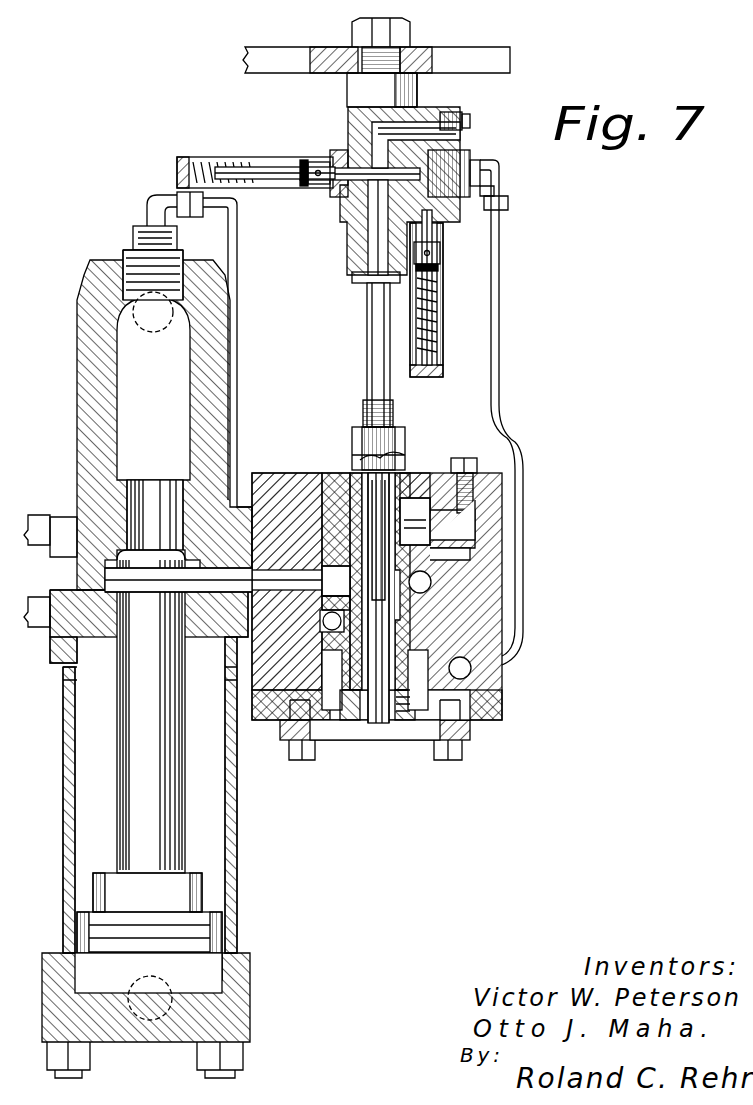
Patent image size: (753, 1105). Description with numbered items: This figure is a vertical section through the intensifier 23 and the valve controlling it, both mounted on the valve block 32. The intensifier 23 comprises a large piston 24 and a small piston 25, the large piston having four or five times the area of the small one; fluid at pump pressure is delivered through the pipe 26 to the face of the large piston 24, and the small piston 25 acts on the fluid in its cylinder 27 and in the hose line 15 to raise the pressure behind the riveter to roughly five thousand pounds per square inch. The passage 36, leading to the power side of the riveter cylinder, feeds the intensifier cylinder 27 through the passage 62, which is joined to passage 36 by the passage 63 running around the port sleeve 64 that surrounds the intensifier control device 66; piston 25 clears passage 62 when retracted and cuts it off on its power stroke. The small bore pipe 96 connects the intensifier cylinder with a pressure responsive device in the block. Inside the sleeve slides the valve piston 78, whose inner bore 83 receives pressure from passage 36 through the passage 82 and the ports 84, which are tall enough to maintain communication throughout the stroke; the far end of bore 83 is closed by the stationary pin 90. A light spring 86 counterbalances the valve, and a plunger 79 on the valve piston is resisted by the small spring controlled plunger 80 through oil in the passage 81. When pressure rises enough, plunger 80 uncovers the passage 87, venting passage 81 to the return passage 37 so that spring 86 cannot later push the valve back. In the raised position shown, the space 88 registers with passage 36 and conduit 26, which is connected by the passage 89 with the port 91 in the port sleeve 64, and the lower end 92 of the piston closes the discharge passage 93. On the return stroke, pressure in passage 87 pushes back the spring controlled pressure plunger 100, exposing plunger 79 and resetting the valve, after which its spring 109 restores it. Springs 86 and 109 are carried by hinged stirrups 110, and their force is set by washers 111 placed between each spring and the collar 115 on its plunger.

The flexible hose line 15 is at (140, 323).
The intensifier 23 is at (238, 826).
The large piston 24 is at (215, 930).
The small piston 25 is at (172, 760).
The pipe 26 is at (165, 1010).
The intensifier cylinder 27 is at (128, 422).
The valve block 32 is at (490, 708).
The passage 36 is at (426, 584).
The return passage 37 is at (472, 676).
The passage 62 is at (255, 582).
The passage 63 is at (335, 581).
The port sleeve 64 is at (408, 482).
The intensifier control device 66 is at (352, 430).
The valve piston 78 is at (400, 450).
The plunger 79 is at (372, 312).
The spring controlled plunger 80 is at (432, 238).
The passage 81 is at (430, 132).
The passage 82 is at (468, 560).
The inner bore 83 is at (355, 500).
The ports 84 is at (430, 528).
The spring 86 is at (440, 355).
The passage 87 is at (470, 165).
The space 88 is at (410, 604).
The passage 89 is at (318, 628).
The stationary pin 90 is at (375, 722).
The port 91 is at (332, 621).
The lower end 92 is at (395, 722).
The discharge passage 93 is at (330, 700).
The small bore pipe 96 is at (230, 238).
The spring controlled pressure plunger 100 is at (348, 172).
The spring 109 is at (290, 181).
The hinged stirrup 110 is at (186, 157).
The washers 111 is at (304, 160).
The collar 115 is at (318, 186).